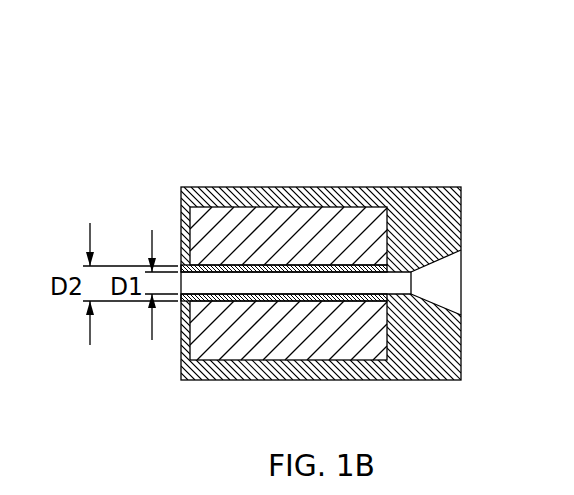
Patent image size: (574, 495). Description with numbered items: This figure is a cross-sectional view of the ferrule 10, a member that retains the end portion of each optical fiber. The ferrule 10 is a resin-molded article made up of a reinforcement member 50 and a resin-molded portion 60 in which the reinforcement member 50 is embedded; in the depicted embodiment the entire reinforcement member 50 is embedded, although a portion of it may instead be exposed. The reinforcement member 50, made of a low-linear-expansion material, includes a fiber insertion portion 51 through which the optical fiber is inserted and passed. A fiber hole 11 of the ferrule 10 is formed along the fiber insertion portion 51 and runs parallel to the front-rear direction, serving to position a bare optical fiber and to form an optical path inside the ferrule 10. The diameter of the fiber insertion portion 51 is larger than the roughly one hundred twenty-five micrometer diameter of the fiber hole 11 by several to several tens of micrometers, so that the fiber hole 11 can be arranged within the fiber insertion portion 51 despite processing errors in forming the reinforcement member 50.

The ferrule 10 is at (178, 112).
The fiber hole 11 is at (211, 284).
The reinforcement member 50 is at (333, 213).
The fiber insertion portion 51 is at (234, 272).
The resin-molded portion 60 is at (413, 200).